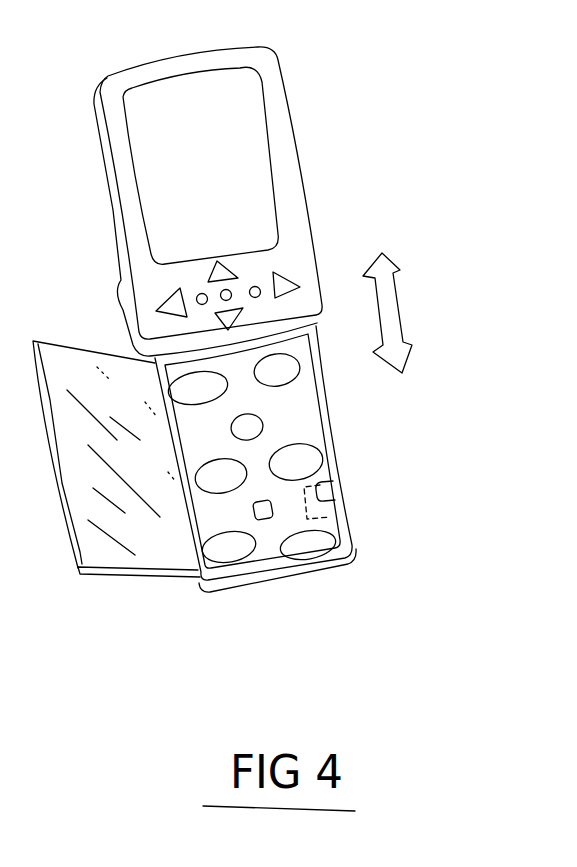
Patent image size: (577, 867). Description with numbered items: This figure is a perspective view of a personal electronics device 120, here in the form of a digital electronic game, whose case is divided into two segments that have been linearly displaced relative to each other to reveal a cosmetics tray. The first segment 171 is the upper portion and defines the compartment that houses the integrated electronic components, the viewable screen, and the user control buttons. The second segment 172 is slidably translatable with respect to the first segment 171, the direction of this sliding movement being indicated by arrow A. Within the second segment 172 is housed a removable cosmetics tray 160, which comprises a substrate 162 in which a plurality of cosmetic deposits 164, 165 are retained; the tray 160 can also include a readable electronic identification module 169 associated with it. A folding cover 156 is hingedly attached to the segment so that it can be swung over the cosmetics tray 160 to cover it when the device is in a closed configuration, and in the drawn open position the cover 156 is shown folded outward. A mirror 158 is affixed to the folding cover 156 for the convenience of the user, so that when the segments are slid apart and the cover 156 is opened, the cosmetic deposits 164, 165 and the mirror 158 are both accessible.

The personal electronics device 120 is at (477, 149).
The first segment 171 is at (306, 153).
The cosmetics tray 160 is at (338, 411).
The substrate 162 is at (290, 401).
The cosmetic deposit 164 is at (307, 549).
The cosmetic deposit 165 is at (264, 514).
The readable electronic identification module 169 is at (317, 487).
The second segment 172 is at (194, 588).
The mirror 158 is at (77, 378).
The folding cover 156 is at (118, 575).
The arrow A is at (407, 305).